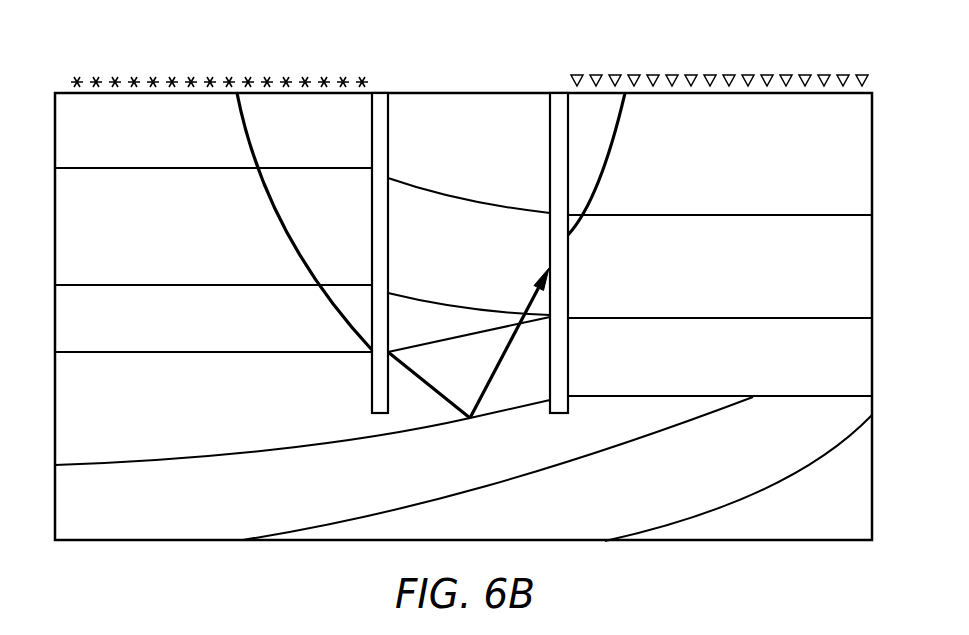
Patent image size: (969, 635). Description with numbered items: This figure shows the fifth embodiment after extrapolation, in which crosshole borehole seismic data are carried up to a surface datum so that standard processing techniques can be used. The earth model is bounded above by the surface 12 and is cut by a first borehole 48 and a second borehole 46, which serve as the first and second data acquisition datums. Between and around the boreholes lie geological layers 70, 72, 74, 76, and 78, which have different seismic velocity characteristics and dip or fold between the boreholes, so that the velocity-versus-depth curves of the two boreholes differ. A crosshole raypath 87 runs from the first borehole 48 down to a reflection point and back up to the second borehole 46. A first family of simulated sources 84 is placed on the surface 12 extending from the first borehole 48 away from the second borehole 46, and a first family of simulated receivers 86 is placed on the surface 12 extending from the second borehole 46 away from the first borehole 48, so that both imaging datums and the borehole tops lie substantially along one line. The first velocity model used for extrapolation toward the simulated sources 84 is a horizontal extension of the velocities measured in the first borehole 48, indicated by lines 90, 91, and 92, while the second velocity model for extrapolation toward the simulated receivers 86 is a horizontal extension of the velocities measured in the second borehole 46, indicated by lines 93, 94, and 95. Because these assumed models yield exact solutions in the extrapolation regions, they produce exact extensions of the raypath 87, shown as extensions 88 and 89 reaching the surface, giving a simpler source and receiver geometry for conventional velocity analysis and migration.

The surface 12 is at (490, 92).
The second borehole 46 is at (551, 414).
The first borehole 48 is at (373, 413).
The geological layer 70 is at (480, 155).
The geological layer 72 is at (480, 263).
The geological layer 74 is at (436, 331).
The geological layer 76 is at (476, 383).
The geological layer 78 is at (476, 478).
The first family of simulated sources 84 is at (365, 73).
The first family of simulated receivers 86 is at (872, 73).
The raypath 87 is at (490, 394).
The extension of raypath 88 is at (328, 296).
The extension of raypath 89 is at (607, 154).
The line 90 is at (170, 168).
The line 91 is at (170, 285).
The line 92 is at (170, 352).
The line 93 is at (682, 215).
The line 94 is at (682, 318).
The line 95 is at (682, 396).